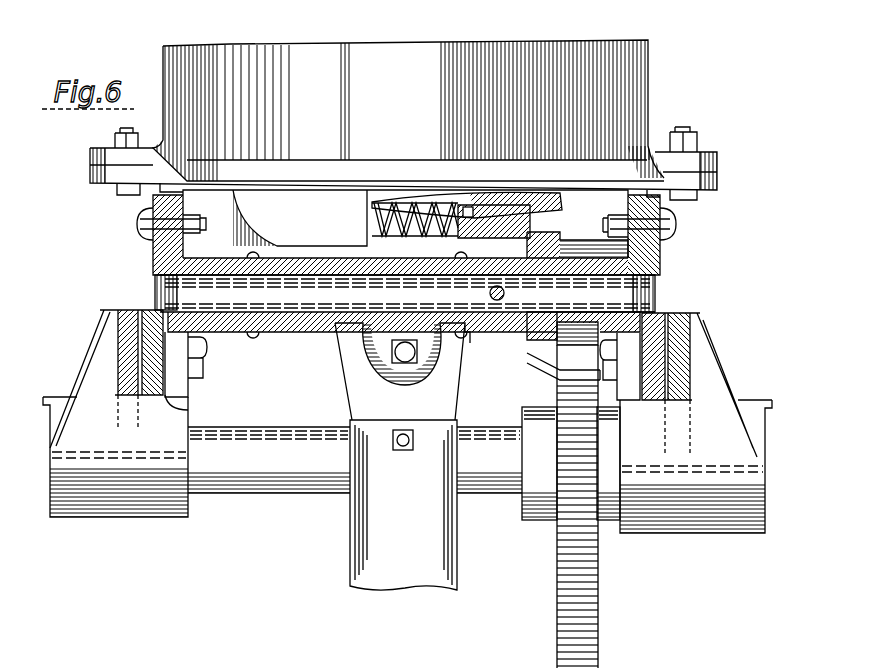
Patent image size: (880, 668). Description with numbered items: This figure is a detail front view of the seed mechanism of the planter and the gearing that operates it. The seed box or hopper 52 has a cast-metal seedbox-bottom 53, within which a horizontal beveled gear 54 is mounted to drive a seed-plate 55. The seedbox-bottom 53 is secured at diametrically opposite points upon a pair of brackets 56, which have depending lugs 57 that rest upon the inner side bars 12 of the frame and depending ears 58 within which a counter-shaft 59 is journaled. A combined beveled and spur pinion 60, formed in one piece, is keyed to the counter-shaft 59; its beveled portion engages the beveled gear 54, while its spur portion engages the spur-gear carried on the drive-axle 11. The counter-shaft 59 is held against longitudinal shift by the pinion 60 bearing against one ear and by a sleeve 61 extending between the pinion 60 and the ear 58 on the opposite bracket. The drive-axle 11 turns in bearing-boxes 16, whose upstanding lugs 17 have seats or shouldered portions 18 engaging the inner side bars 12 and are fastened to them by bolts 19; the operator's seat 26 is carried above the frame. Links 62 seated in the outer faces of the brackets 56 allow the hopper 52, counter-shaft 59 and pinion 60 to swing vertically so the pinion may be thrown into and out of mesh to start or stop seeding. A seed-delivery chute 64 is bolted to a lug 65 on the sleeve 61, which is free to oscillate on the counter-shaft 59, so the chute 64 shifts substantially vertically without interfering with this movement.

The drive-axle 11 is at (262, 480).
The inner side bars 12 is at (150, 305).
The bearing-boxes 16 is at (150, 500).
The upstanding lugs 17 is at (172, 382).
The seats or shouldered portions 18 is at (153, 407).
The bolts 19 is at (207, 356).
The operator's seat 26 is at (588, 631).
The seed box or hopper 52 is at (647, 96).
The seedbox-bottom 53 is at (276, 205).
The beveled gear 54 is at (562, 209).
The seed-plate 55 is at (480, 206).
The brackets 56 is at (153, 263).
The depending lugs 57 is at (166, 292).
The depending ears 58 is at (219, 258).
The counter-shaft 59 is at (340, 291).
The combined beveled and spur pinion 60 is at (552, 351).
The sleeve 61 is at (279, 319).
The links 62 is at (151, 205).
The seed-delivery chute 64 is at (400, 548).
The lug 65 is at (393, 366).